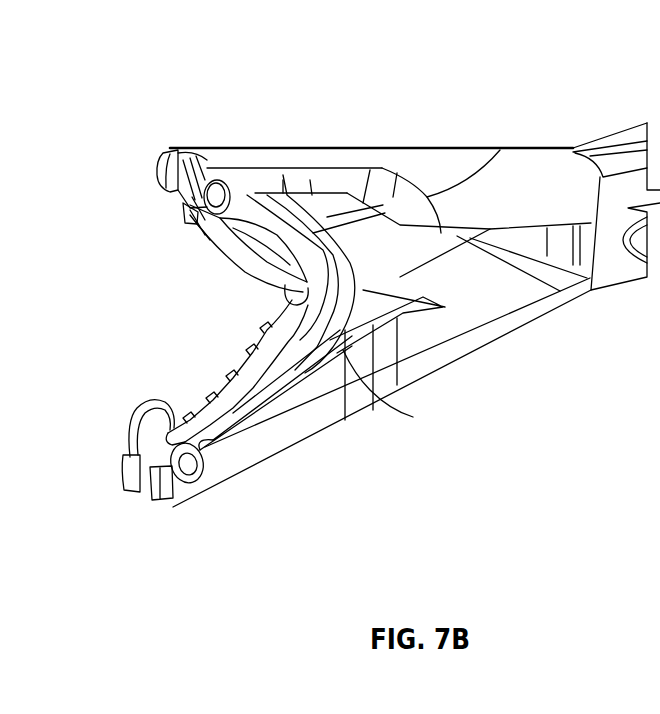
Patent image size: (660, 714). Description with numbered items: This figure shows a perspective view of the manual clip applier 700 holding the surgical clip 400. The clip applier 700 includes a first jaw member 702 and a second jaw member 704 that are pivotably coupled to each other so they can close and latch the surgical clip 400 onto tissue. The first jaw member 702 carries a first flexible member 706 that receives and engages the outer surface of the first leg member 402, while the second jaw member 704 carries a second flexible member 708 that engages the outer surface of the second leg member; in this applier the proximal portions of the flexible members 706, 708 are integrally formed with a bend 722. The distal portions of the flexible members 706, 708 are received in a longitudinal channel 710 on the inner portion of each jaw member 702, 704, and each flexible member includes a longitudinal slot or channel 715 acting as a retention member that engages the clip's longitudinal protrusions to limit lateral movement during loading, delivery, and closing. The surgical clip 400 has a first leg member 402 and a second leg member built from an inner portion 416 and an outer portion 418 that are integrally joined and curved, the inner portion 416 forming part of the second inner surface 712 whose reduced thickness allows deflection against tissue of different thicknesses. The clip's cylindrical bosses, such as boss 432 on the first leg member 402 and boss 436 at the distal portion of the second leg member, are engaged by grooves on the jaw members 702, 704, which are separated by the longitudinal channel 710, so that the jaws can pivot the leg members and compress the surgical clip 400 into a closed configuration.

The clip applier 700 is at (568, 88).
The first jaw member 702 is at (540, 310).
The second jaw member 704 is at (470, 152).
The first flexible member 706 is at (332, 395).
The second flexible member 708 is at (287, 203).
The longitudinal channel 710 is at (355, 210).
The second inner surface 712 is at (431, 191).
The longitudinal slot or channel 715 is at (352, 197).
The bend 722 is at (357, 263).
The surgical clip 400 is at (130, 367).
The first leg member 402 is at (247, 370).
The inner portion 416 is at (240, 265).
The outer portion 418 is at (265, 187).
The boss 432 is at (197, 470).
The boss 436 is at (215, 183).